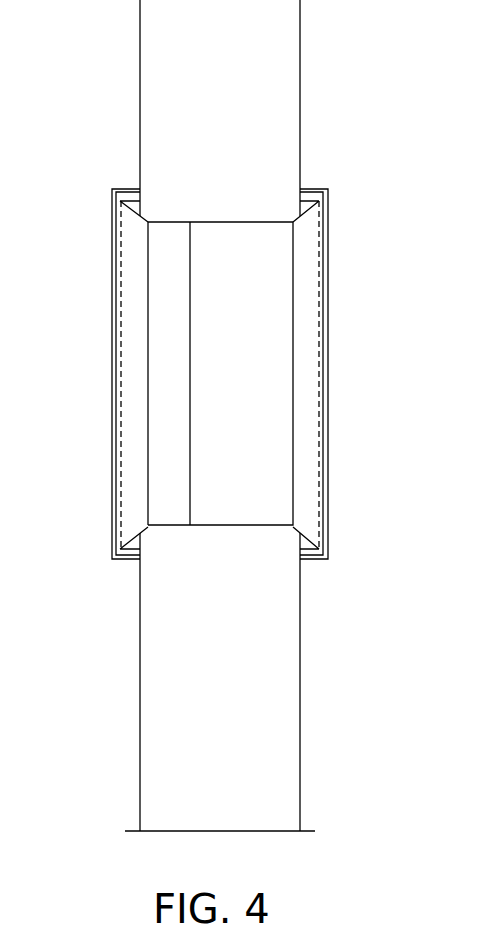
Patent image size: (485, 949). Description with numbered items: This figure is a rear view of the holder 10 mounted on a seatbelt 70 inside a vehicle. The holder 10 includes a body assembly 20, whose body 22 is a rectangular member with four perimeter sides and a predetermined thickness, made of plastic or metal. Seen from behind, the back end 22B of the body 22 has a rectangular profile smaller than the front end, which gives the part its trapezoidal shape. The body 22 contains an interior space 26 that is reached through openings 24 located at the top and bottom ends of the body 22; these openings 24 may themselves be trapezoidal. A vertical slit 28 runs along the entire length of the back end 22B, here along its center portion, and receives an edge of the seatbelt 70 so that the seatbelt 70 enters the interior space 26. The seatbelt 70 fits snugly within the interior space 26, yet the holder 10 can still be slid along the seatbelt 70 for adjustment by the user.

The holder 10 is at (332, 104).
The body assembly 20 is at (104, 246).
The body 22 is at (112, 320).
The back end 22B is at (170, 380).
The openings 24 is at (305, 200).
The interior space 26 is at (238, 383).
The slit 28 is at (190, 432).
The seatbelt 70 is at (165, 60).